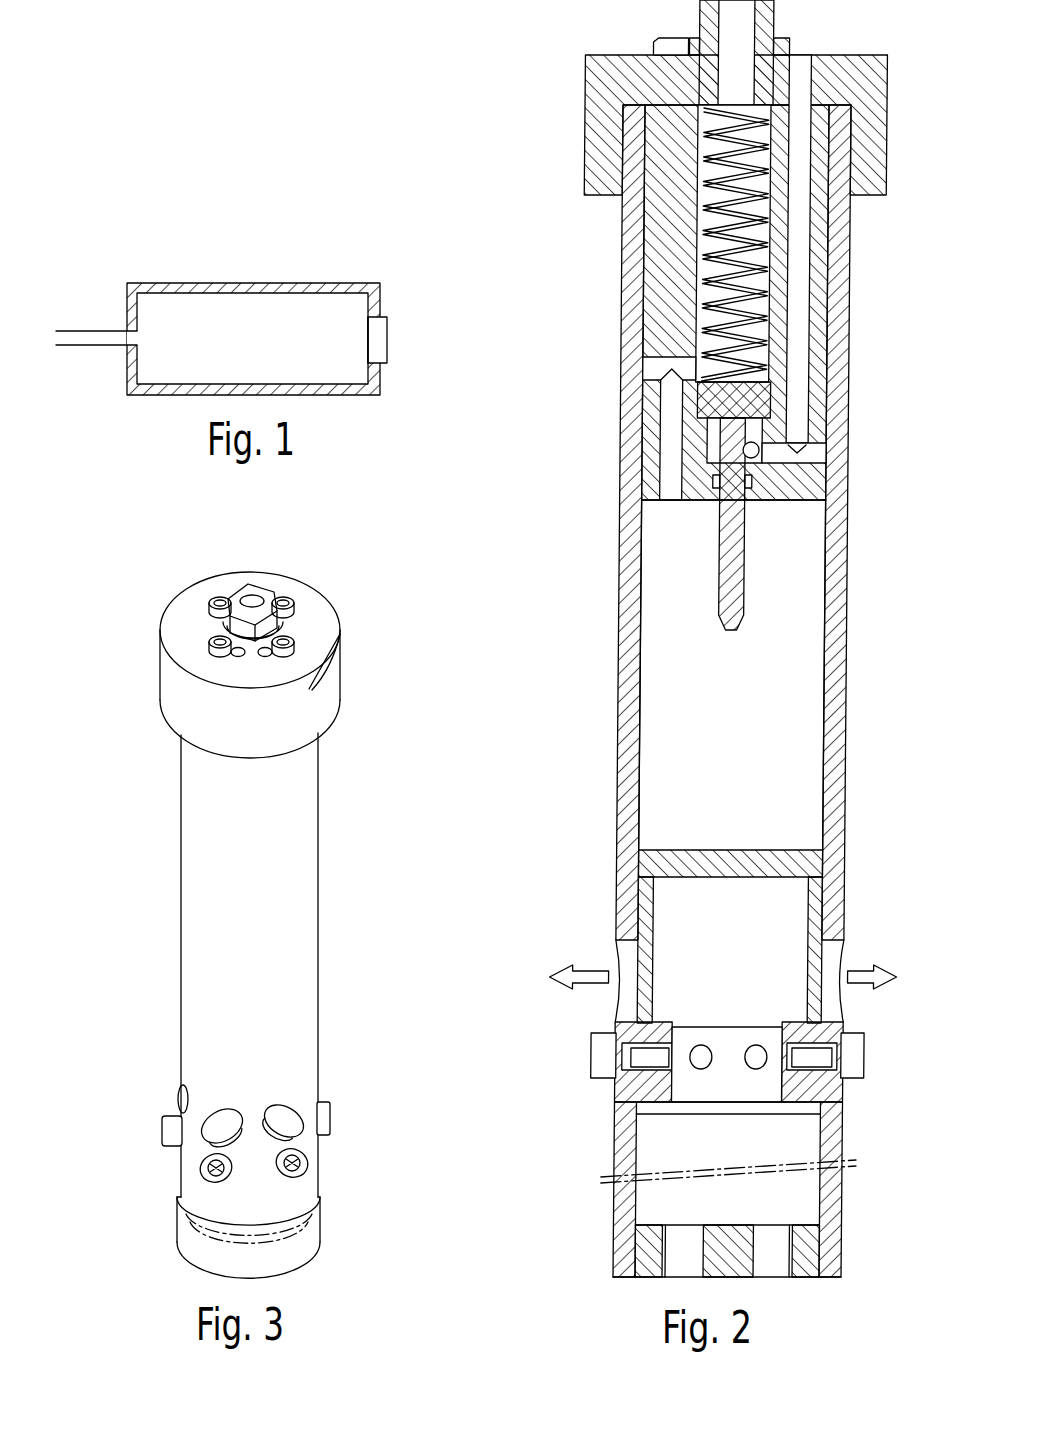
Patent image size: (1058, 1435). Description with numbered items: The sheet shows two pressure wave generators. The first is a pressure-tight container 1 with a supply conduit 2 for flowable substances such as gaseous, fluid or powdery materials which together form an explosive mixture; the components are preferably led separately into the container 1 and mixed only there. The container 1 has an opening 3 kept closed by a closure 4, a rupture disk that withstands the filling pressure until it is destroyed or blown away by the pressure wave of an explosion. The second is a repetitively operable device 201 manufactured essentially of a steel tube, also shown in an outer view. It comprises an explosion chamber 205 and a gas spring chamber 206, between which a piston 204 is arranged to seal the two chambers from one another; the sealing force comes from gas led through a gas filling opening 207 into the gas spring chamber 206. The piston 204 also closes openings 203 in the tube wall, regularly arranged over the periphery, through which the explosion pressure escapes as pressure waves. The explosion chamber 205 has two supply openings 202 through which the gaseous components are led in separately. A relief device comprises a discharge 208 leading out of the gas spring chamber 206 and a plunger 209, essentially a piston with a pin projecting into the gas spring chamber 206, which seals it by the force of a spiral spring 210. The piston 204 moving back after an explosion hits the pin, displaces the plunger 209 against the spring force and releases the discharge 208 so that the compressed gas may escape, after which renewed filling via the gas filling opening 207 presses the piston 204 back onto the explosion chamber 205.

In FIG. 1, the pressure-tight container 1 is at (191, 289).
In FIG. 1, the supply conduit 2 is at (90, 339).
In FIG. 1, the opening 3 is at (364, 336).
In FIG. 1, the closure 4 is at (381, 338).
In FIG. 3, the device 201 is at (340, 777).
In FIG. 2, the device 201 is at (597, 777).
In FIG. 2, the supply openings 202 is at (677, 1235).
In FIG. 3, the openings 203 is at (223, 1120).
In FIG. 2, the openings 203 is at (825, 962).
In FIG. 2, the piston 204 is at (770, 855).
In FIG. 2, the explosion chamber 205 is at (767, 1143).
In FIG. 2, the gas spring chamber 206 is at (790, 663).
In FIG. 2, the gas filling opening 207 is at (722, 28).
In FIG. 3, the discharge 208 is at (265, 657).
In FIG. 2, the discharge 208 is at (787, 65).
In FIG. 2, the plunger 209 is at (732, 552).
In FIG. 2, the spiral spring 210 is at (755, 282).